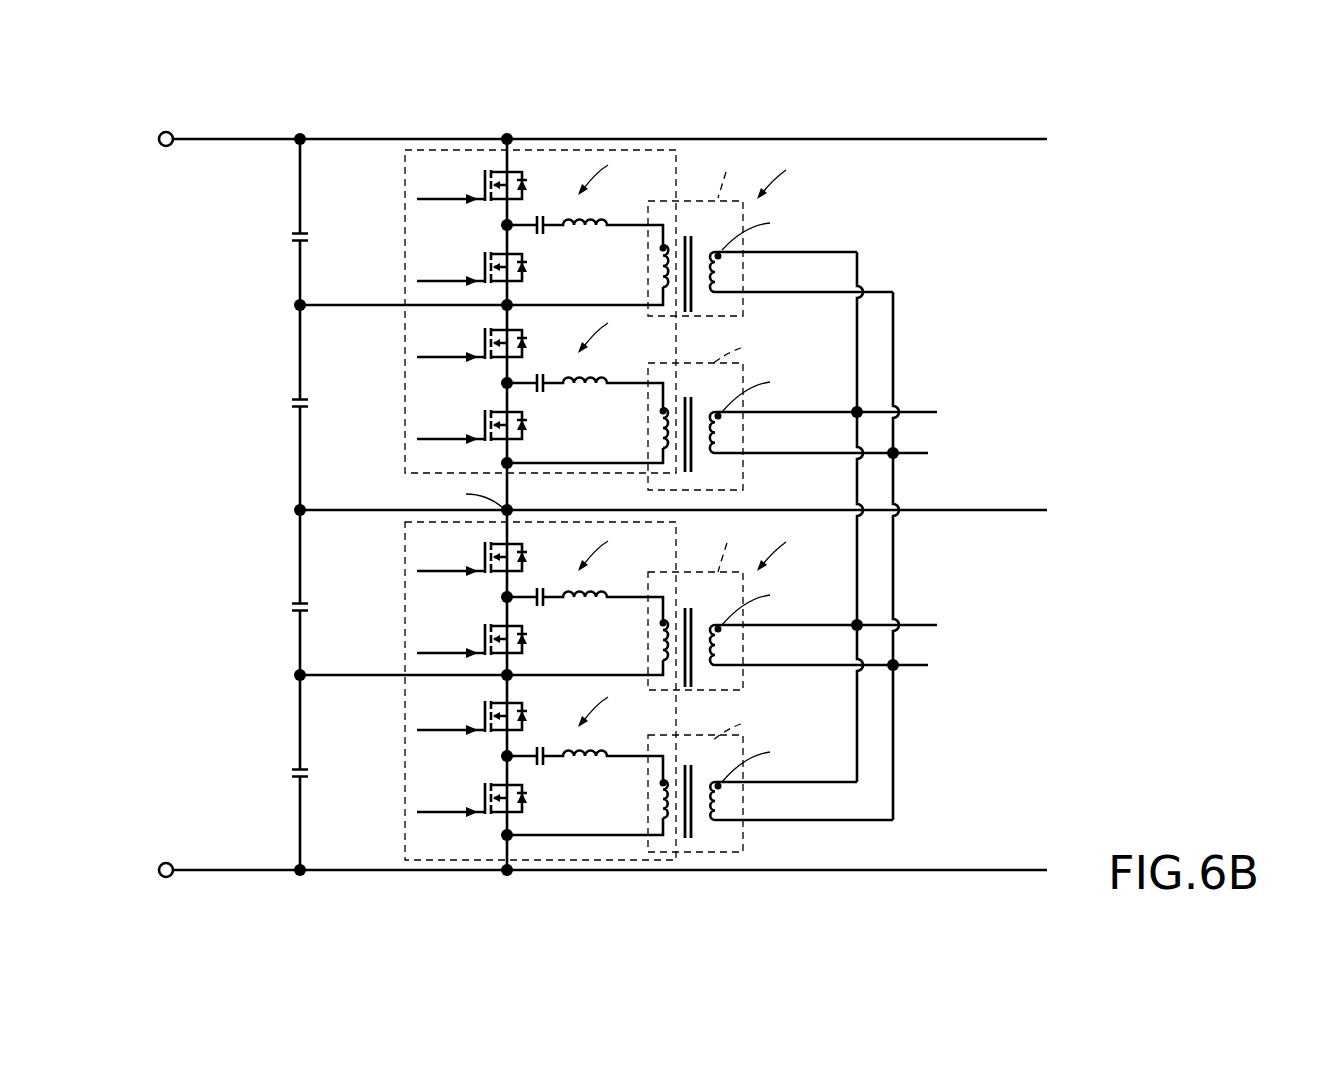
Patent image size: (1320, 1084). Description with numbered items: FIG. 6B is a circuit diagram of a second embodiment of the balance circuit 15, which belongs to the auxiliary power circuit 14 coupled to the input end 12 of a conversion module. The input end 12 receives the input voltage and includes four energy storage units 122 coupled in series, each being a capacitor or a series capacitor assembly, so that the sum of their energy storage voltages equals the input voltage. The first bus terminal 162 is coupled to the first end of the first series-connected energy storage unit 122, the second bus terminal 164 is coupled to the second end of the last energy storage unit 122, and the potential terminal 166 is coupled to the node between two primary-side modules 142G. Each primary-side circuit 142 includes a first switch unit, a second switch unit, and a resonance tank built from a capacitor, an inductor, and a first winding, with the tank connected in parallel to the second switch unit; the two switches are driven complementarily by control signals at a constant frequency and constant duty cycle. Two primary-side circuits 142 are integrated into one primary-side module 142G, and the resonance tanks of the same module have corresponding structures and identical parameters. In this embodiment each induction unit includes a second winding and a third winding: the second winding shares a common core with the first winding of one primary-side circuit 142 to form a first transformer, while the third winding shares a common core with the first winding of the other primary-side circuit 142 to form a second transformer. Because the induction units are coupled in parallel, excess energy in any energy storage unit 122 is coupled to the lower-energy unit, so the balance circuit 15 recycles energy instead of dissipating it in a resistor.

The input end 12 is at (316, 128).
The auxiliary power circuit 14 is at (686, 128).
The balance circuit 15 is at (1125, 203).
The energy storage unit 122 is at (283, 235).
The primary-side circuit 142 is at (470, 235).
The primary-side module 142G is at (456, 163).
The first bus terminal 162 is at (981, 137).
The second bus terminal 164 is at (995, 867).
The potential terminal 166 is at (983, 508).